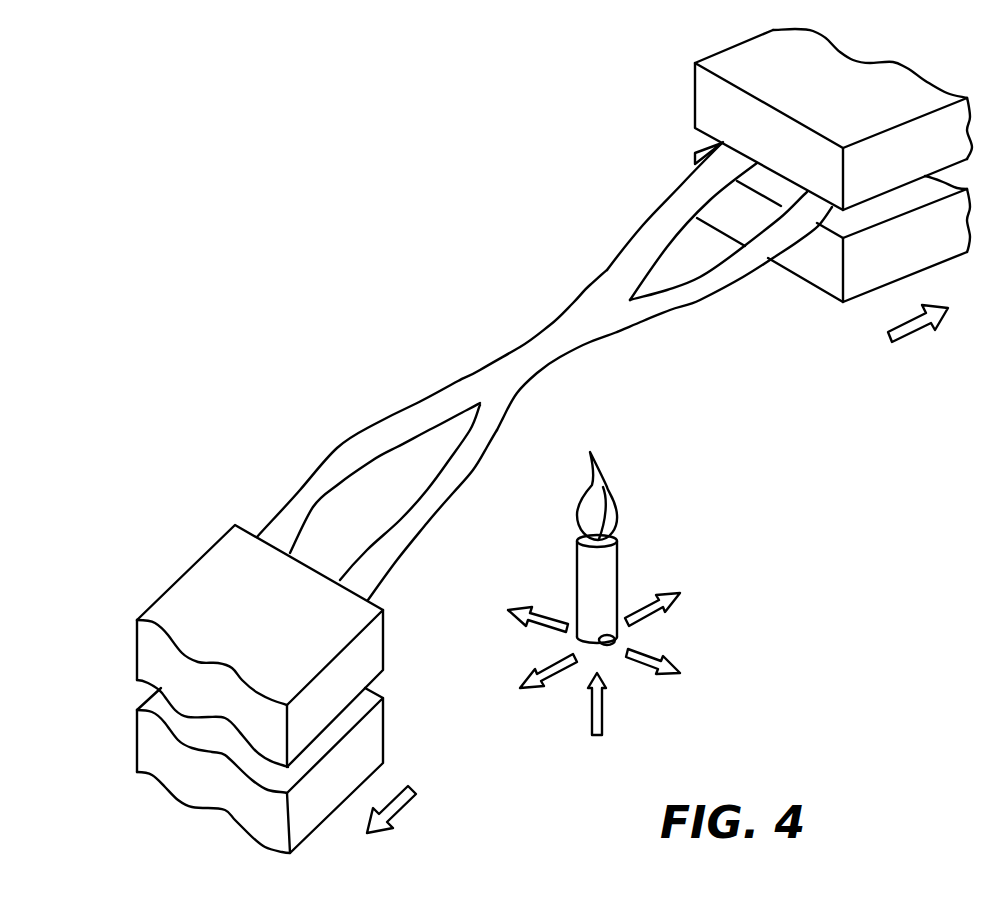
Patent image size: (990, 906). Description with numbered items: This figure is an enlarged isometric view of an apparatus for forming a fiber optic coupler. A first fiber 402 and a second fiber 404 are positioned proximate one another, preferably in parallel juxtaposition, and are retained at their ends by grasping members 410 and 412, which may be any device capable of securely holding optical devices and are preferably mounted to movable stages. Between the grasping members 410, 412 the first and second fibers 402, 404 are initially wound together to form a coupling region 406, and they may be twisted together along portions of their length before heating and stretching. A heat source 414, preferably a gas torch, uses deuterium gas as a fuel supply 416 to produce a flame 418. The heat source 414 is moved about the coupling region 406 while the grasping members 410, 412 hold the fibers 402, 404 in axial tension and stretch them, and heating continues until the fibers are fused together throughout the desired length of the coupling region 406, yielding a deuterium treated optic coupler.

The first fiber 402 is at (684, 184).
The second fiber 404 is at (757, 262).
The coupling region 406 is at (548, 290).
The grasping member 410 is at (862, 294).
The grasping member 412 is at (372, 743).
The heat source 414 is at (610, 560).
The fuel supply 416 is at (602, 710).
The flame 418 is at (608, 482).